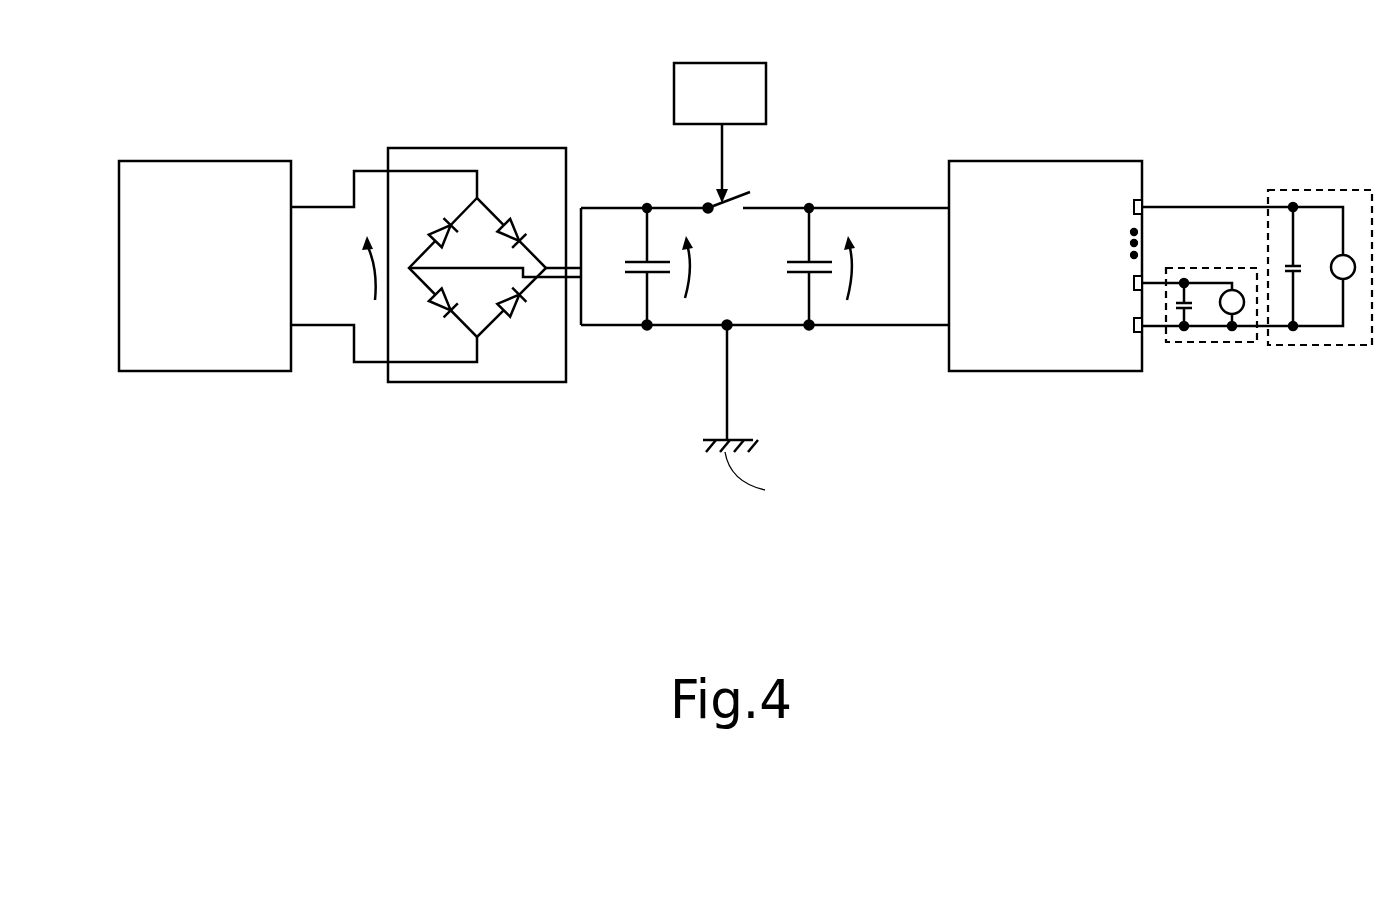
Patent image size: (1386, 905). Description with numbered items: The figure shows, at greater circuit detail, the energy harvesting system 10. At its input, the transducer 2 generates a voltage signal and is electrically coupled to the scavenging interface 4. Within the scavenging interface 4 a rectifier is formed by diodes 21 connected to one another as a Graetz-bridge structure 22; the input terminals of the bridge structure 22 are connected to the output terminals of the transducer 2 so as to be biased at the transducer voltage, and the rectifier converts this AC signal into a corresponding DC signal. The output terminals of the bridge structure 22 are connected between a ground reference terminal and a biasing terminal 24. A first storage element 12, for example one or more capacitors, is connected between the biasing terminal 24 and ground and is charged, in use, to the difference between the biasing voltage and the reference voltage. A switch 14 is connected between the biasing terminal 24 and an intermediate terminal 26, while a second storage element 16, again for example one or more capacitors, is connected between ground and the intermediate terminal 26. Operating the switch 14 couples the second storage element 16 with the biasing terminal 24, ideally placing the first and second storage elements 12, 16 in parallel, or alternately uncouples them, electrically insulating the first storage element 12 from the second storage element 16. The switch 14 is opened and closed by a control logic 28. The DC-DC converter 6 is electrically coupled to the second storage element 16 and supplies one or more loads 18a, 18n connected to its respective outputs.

The energy harvesting system 10 is at (200, 84).
The transducer 2 is at (140, 368).
The scavenging interface 4 is at (438, 384).
The DC-DC converter 6 is at (1040, 364).
The first storage element 12 is at (640, 276).
The switch 14 is at (732, 196).
The second storage element 16 is at (800, 276).
The load 18a is at (1227, 343).
The load 18n is at (1305, 190).
The diodes 21 is at (446, 224).
The Graetz-bridge structure 22 is at (504, 190).
The biasing terminal 24 is at (647, 192).
The intermediate terminal 26 is at (812, 193).
The control logic 28 is at (767, 88).